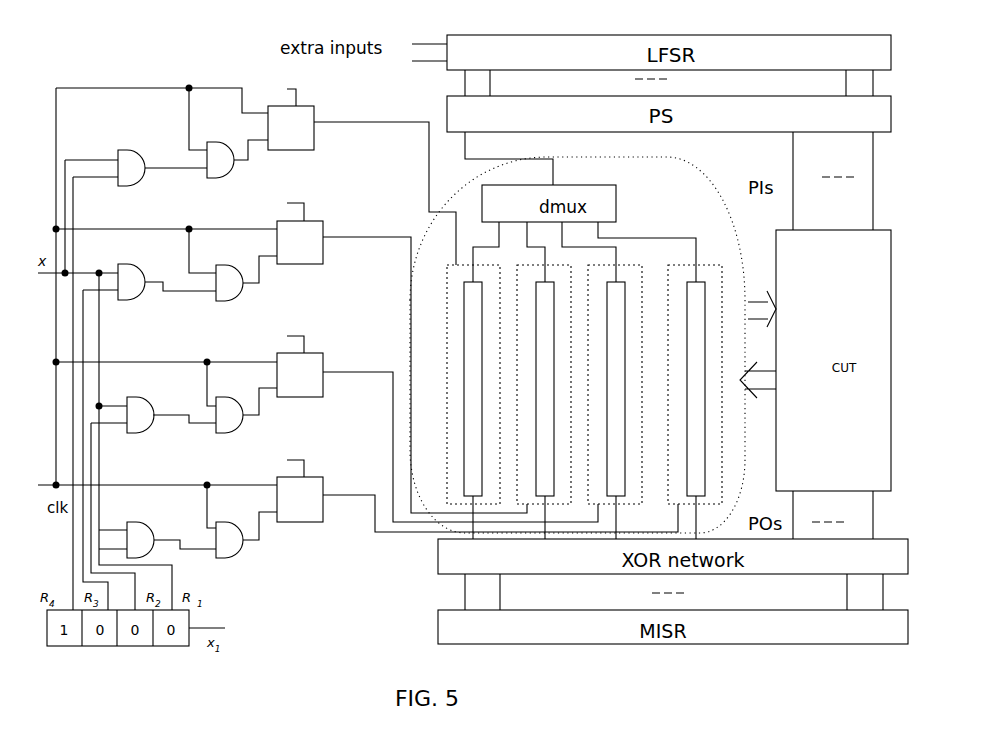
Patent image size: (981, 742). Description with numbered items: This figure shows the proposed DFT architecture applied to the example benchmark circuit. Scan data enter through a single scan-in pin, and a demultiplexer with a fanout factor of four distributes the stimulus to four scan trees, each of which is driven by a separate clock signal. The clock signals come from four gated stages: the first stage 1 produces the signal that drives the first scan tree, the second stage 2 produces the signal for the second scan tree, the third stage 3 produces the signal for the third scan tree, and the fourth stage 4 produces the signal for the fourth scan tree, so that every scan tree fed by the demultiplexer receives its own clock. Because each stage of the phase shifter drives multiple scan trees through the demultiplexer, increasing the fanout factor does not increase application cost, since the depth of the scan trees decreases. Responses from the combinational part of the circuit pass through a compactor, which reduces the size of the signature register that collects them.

The first stage (mux, AND gates, A1/B1 inputs, R1' output) 1 is at (366, 503).
The second stage (mux, AND gates, A2/B2 inputs, R2' output) 2 is at (326, 419).
The third stage (mux, AND gates, A3/B3 inputs, R3' output) 3 is at (290, 347).
The fourth stage (mux, AND gates, A4/B4 inputs, R4' output) 4 is at (256, 169).